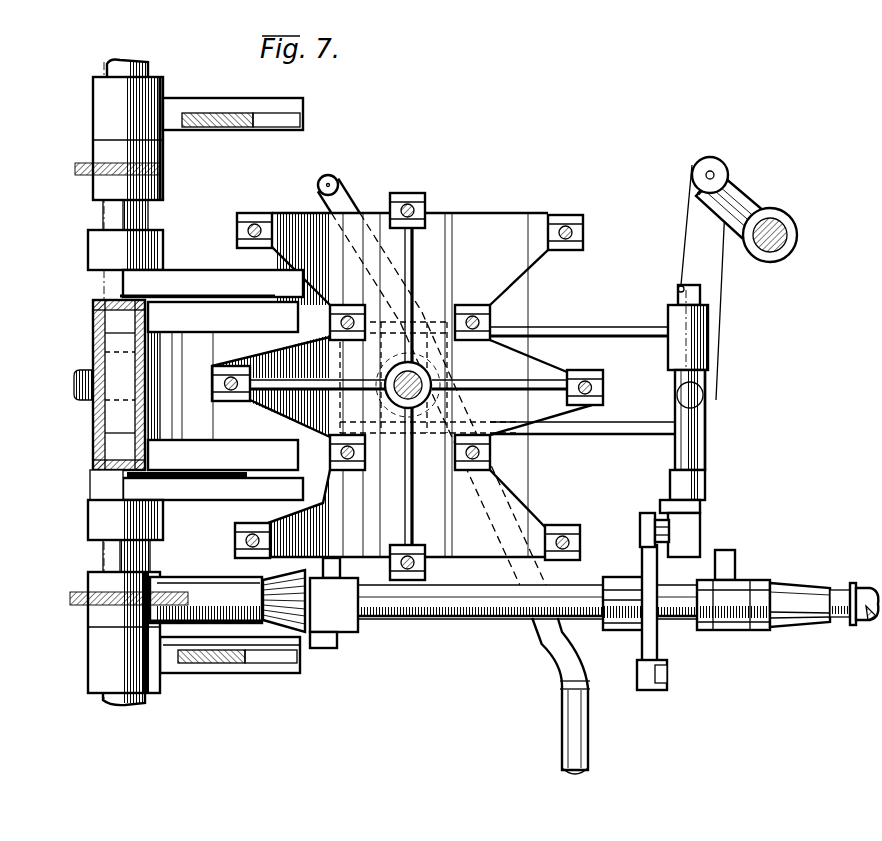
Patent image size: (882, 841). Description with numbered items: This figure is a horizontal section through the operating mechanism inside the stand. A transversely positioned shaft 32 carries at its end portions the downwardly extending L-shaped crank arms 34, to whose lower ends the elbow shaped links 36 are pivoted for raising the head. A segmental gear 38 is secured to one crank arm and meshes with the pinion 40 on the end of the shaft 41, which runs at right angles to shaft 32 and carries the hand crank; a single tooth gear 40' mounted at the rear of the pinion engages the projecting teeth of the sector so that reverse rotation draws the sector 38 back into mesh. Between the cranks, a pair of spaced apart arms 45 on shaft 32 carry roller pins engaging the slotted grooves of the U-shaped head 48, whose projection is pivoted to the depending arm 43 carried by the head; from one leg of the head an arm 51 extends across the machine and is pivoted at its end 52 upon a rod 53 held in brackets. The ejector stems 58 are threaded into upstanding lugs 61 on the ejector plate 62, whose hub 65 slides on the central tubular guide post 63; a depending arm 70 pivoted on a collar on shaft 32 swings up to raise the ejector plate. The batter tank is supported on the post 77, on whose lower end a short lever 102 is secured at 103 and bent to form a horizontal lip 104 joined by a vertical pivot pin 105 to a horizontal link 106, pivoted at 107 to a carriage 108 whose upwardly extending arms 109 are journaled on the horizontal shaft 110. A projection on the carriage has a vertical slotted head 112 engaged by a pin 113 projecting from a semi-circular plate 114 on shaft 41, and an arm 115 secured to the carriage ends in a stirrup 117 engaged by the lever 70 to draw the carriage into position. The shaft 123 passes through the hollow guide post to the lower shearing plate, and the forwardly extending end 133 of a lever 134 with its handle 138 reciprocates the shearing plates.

The transversely positioned shaft 32 is at (138, 62).
The L-shaped crank arms 34 is at (240, 100).
The elbow shaped link 36 is at (245, 128).
The segmental gear 38 is at (290, 646).
The pinion 40 is at (255, 594).
The single tooth gear 40' is at (349, 607).
The shaft 41 is at (455, 614).
The depending arm 43 is at (93, 320).
The spaced apart arms 45 is at (190, 276).
The U-shaped head 48 is at (225, 342).
The arm 51 is at (588, 326).
The pivoted end of arm 52 is at (708, 338).
The rod 53 is at (700, 420).
The stem 58 is at (570, 232).
The upstanding lugs 61 is at (560, 214).
The ejector plate 62 is at (488, 214).
The tubular guide post 63 is at (425, 372).
The hub 65 is at (436, 383).
The depending arm 70 is at (78, 396).
The vertically extending post 77 is at (788, 238).
The short lever 102 is at (748, 211).
The securing point of lever 103 is at (791, 229).
The horizontal lip 104 is at (729, 159).
The vertical pivot pin 105 is at (709, 170).
The horizontal link 106 is at (720, 288).
The pivot of link 107 is at (703, 395).
The carriage 108 is at (706, 455).
The upwardly extending arms 109 is at (706, 488).
The horizontal shaft 110 is at (701, 507).
The vertical slotted head 112 is at (670, 537).
The pin 113 is at (697, 535).
The semi-circular plate 114 is at (645, 690).
The arm 115 is at (627, 431).
The stirrup 117 is at (352, 347).
The shaft 123 is at (401, 407).
The forwardly extending end of lever 133 is at (350, 205).
The lever 134 is at (549, 637).
The handle 138 is at (561, 739).